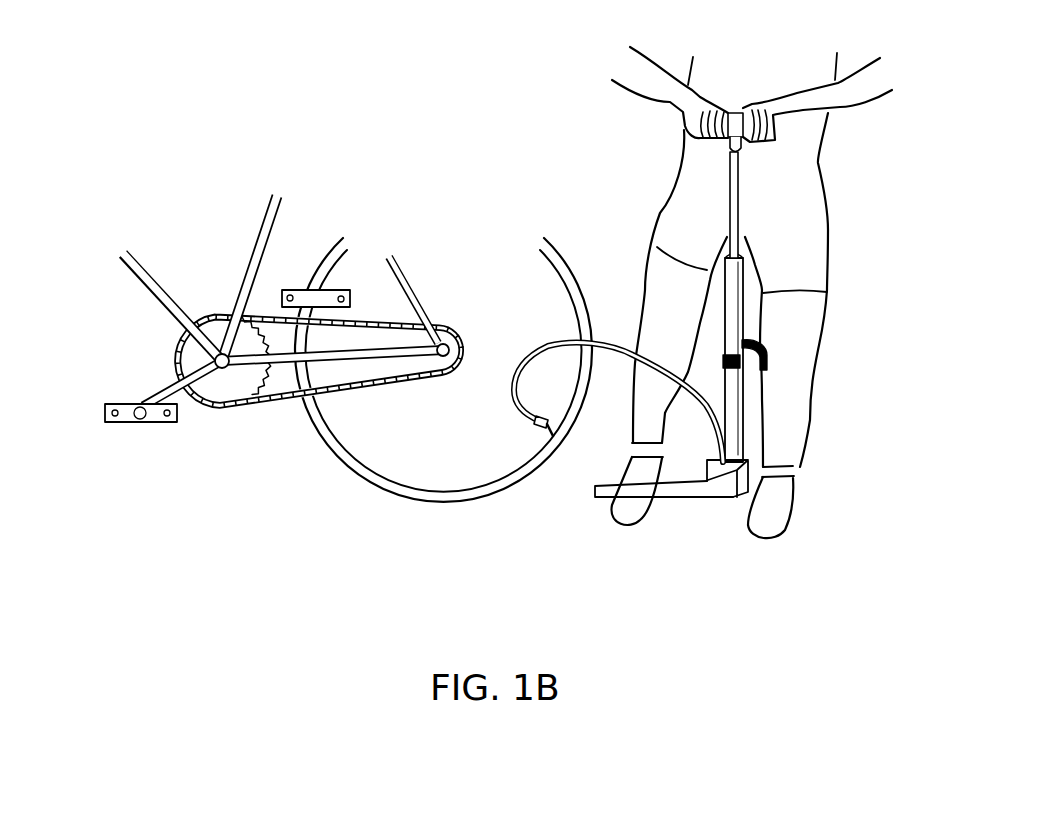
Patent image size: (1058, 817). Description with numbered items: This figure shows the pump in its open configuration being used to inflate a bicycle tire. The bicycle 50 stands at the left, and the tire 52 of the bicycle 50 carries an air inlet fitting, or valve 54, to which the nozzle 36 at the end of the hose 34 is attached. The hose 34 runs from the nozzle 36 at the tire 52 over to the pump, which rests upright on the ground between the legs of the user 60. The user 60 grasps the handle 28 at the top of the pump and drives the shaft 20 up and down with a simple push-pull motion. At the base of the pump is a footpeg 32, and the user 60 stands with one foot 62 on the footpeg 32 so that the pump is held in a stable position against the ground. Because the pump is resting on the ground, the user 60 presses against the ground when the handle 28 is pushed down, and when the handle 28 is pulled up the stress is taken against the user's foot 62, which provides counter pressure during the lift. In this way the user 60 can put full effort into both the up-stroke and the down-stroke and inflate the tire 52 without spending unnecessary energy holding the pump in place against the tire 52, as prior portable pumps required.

The shaft 20 is at (664, 300).
The handle 28 is at (735, 110).
The footpeg 32 is at (600, 500).
The hose 34 is at (622, 340).
The nozzle 36 is at (535, 422).
The bicycle 50 is at (227, 205).
The tire 52 is at (390, 490).
The air inlet fitting (valve) 54 is at (545, 431).
The user 60 is at (754, 319).
The foot 62 is at (627, 523).